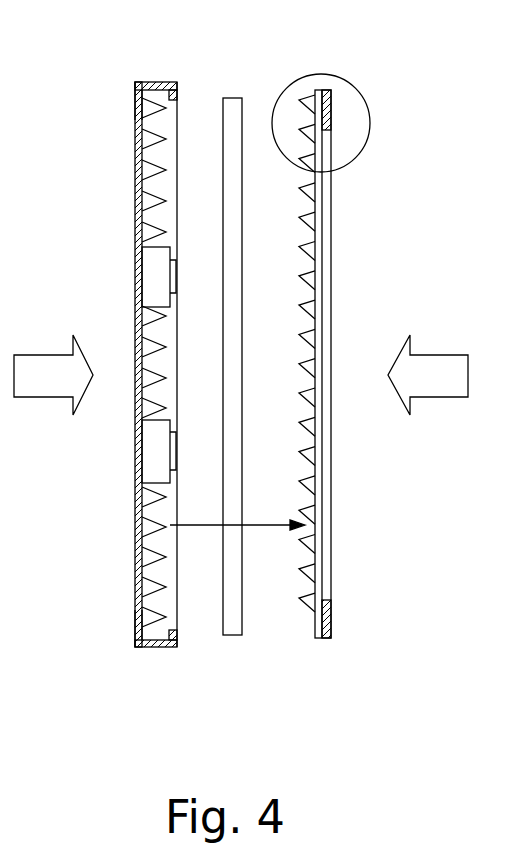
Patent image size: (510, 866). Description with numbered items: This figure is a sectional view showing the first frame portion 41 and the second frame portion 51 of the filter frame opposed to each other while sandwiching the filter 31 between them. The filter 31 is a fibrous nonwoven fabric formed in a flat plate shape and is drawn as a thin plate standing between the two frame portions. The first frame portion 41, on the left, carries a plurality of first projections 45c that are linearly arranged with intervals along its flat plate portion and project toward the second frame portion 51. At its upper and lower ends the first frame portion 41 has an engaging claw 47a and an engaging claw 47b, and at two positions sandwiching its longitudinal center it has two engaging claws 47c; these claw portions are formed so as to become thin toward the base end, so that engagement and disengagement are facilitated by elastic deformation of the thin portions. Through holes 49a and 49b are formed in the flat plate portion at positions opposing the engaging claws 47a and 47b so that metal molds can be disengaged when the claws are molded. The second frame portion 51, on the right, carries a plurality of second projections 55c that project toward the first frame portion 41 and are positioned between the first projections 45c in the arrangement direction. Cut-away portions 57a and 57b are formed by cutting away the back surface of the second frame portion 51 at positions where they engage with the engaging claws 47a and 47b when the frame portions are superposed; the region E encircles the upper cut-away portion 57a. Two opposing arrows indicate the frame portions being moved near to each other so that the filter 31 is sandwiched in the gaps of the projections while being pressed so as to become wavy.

The filter 31 is at (233, 98).
The first frame portion 41 is at (136, 206).
The first projections 45c is at (137, 414).
The engaging claw 47a is at (176, 86).
The engaging claw 47b is at (178, 643).
The engaging claws 47c is at (160, 275).
The through hole 49a is at (135, 90).
The through hole 49b is at (135, 630).
The second frame portion 51 is at (337, 293).
The second projections 55c is at (325, 340).
The cut-away portion 57a is at (328, 98).
The cut-away portion 57b is at (332, 632).
The enlarged region E is at (371, 118).